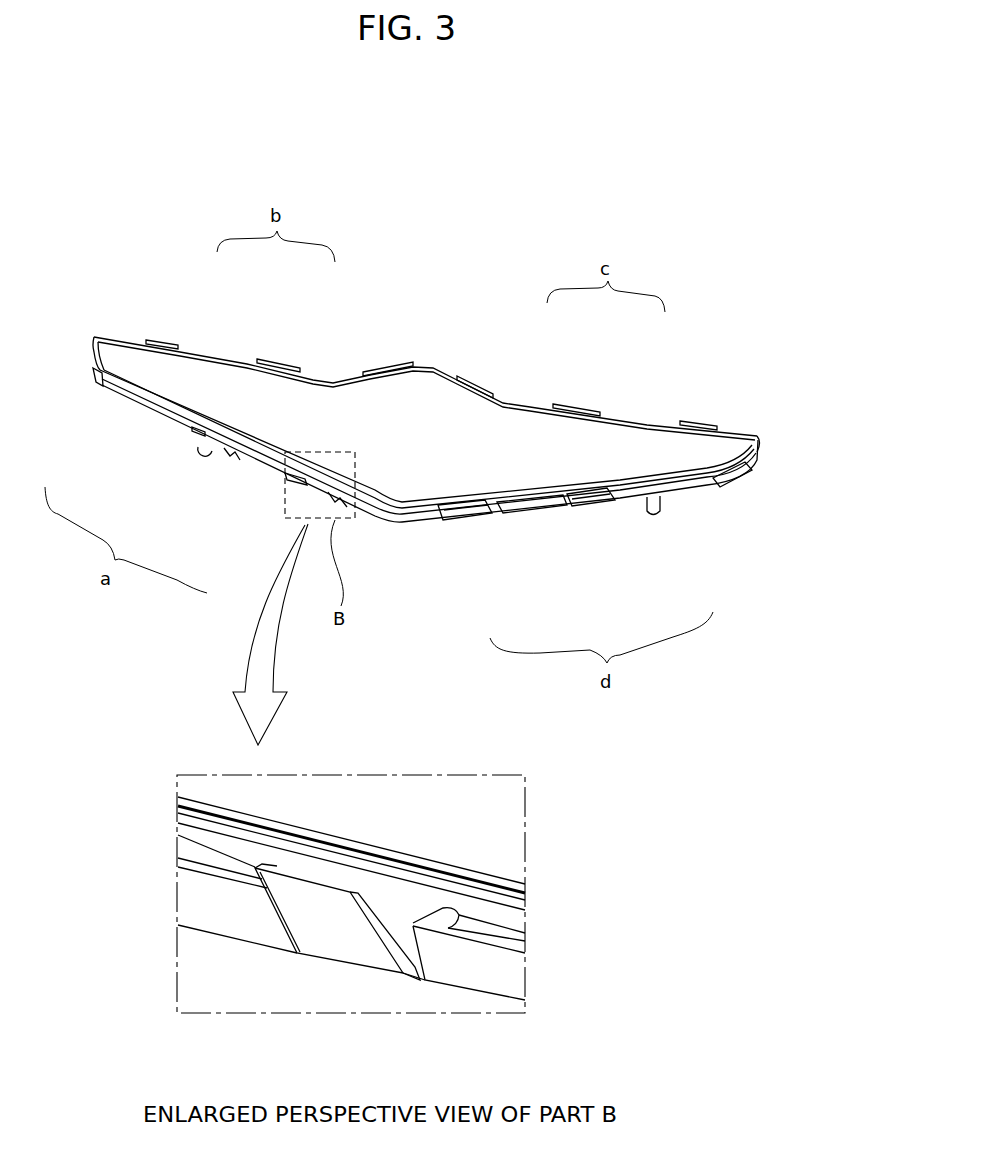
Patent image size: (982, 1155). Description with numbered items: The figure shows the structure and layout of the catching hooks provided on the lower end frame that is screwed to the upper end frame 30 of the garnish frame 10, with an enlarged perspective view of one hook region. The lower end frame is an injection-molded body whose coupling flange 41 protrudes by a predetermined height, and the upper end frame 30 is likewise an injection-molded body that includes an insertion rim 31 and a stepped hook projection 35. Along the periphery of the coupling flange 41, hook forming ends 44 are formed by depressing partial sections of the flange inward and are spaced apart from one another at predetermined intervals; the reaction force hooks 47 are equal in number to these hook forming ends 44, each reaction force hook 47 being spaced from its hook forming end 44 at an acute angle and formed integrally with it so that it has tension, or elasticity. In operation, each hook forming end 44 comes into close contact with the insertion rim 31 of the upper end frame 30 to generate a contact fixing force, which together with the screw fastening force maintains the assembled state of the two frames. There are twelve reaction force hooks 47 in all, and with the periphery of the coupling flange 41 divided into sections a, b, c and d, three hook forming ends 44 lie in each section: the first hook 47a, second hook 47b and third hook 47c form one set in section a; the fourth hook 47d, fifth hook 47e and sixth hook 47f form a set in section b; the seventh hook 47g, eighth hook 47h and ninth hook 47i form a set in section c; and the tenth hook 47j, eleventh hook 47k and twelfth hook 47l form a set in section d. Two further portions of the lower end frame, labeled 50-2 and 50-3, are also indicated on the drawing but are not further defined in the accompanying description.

The grille body 10 is at (728, 438).
The upper end frame 30 is at (92, 341).
The insertion rim 31 is at (497, 920).
The stepped hook projection 35 is at (306, 848).
The coupling flange 41 is at (486, 975).
The hook forming end 44 is at (413, 907).
The reaction force hook 47 is at (524, 146).
The first hook 47a is at (290, 515).
The second hook 47b is at (203, 456).
The third hook 47c is at (100, 382).
The fourth hook 47d is at (160, 341).
The fifth hook 47e is at (292, 362).
The sixth hook 47f is at (385, 370).
The seventh hook 47g is at (488, 378).
The eighth hook 47h is at (580, 405).
The ninth hook 47i is at (697, 418).
The tenth hook 47j is at (735, 500).
The eleventh hook 47k is at (583, 520).
The twelfth hook 47l is at (470, 522).
The fastening portion 50-2 is at (155, 418).
The fastening pin 50-3 is at (653, 520).